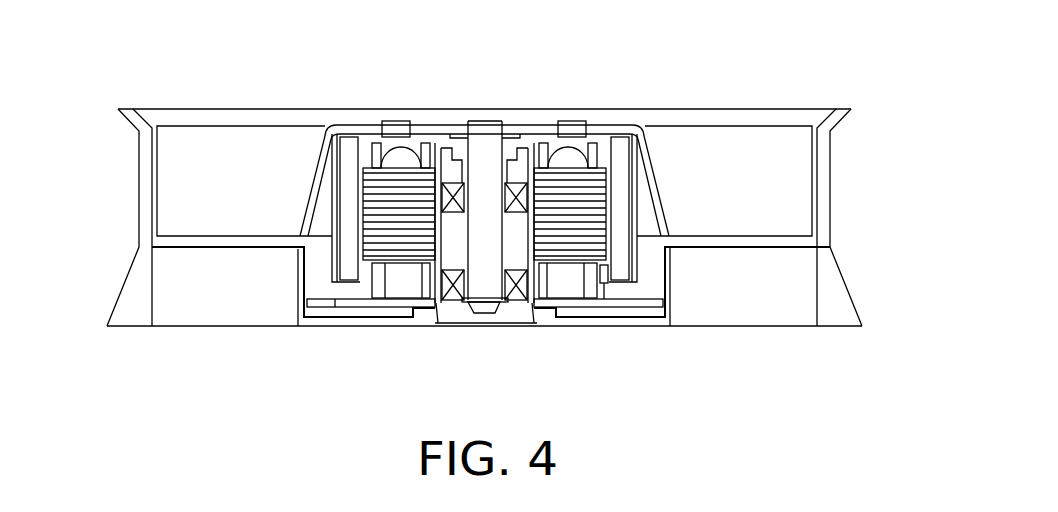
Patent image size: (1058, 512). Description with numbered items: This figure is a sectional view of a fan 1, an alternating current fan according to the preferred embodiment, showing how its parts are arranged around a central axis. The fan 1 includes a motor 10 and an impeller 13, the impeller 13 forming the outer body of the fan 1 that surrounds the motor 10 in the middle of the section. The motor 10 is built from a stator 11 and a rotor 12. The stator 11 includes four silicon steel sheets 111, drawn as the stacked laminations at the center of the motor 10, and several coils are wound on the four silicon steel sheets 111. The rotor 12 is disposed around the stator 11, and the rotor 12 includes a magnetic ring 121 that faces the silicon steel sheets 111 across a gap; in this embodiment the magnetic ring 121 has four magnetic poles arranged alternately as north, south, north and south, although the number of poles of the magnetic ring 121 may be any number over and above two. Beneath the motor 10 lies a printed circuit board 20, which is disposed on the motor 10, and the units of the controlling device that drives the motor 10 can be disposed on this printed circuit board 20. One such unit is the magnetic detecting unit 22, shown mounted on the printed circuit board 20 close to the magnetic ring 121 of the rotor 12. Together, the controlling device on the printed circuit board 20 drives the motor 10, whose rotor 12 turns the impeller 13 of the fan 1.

The fan 1 is at (83, 59).
The motor 10 is at (331, 15).
The stator 11 is at (634, 193).
The rotor 12 is at (572, 206).
The impeller 13 is at (718, 148).
The silicon steel sheets 111 is at (583, 221).
The magnetic ring 121 is at (618, 252).
The printed circuit board 20 is at (580, 303).
The magnetic detecting unit 22 is at (608, 277).